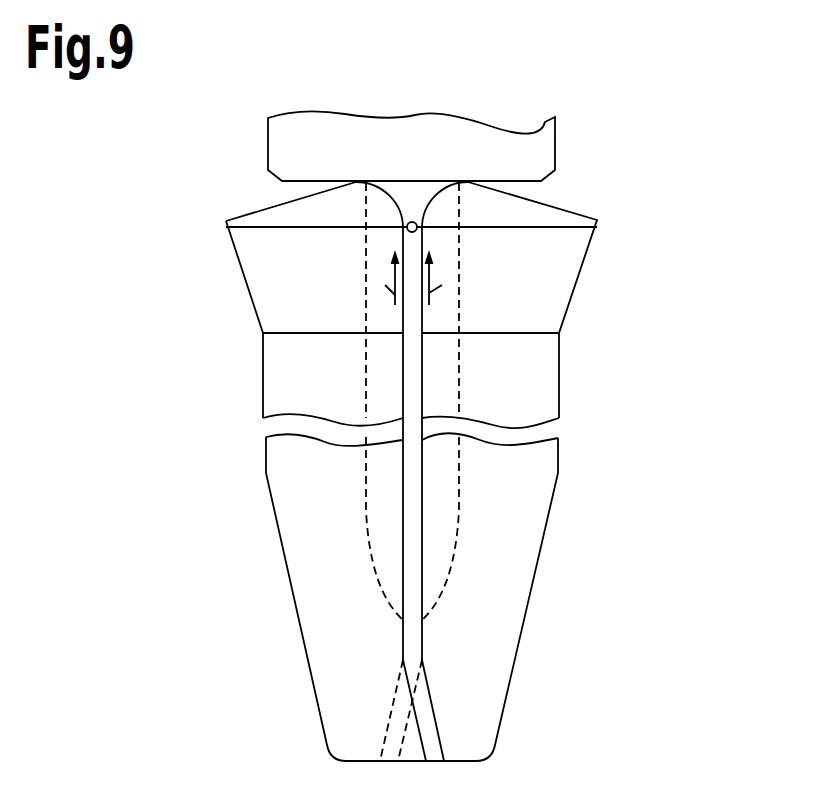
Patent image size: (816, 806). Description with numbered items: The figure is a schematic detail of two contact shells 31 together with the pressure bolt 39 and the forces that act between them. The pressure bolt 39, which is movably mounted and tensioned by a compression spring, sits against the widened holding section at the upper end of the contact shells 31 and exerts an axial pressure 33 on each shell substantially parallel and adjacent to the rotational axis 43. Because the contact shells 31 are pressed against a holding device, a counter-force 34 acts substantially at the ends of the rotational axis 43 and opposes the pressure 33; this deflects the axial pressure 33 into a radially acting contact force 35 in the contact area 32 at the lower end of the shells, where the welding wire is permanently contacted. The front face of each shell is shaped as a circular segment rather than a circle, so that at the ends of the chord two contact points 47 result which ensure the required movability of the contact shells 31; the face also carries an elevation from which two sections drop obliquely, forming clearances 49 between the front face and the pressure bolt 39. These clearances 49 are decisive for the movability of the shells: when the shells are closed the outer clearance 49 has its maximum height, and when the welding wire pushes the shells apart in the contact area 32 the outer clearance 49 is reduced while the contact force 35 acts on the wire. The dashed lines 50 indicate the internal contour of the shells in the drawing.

The contact shell 31 is at (191, 555).
The contact area 32 is at (346, 679).
The pressure 33 is at (365, 142).
The counter-force 34 is at (263, 331).
The contact force 35 is at (203, 708).
The pressure bolt 39 is at (523, 152).
The rotational axis 43 is at (412, 222).
The contact points 47 is at (374, 244).
The clearances 49 is at (257, 198).
The weakened section lines 50 is at (385, 365).